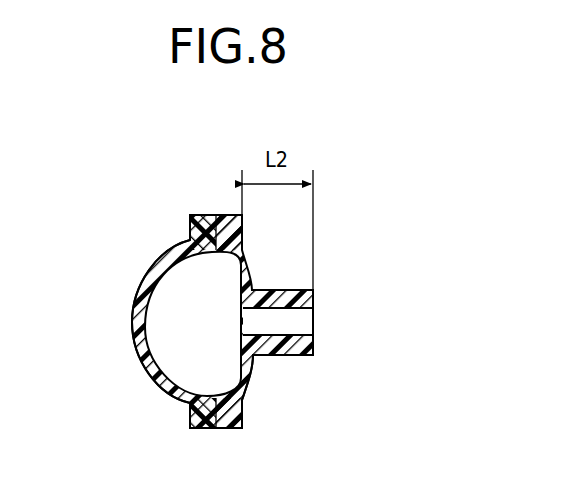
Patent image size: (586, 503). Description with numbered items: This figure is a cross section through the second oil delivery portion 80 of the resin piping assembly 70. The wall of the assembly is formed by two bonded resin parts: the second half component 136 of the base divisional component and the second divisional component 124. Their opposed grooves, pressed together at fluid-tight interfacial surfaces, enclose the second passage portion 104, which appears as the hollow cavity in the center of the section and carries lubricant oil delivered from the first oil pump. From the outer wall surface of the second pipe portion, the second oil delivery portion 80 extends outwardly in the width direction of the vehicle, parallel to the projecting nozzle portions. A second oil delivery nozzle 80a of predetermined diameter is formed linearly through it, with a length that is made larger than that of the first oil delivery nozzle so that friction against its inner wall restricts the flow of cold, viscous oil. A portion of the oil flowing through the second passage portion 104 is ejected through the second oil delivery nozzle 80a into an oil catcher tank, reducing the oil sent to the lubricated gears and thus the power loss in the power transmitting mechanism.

The resin piping assembly 70 is at (136, 235).
The second half component 136 is at (141, 337).
The second passage portion 104 is at (204, 304).
The second oil delivery portion 80 is at (278, 300).
The second oil delivery nozzle 80a is at (285, 336).
The second divisional component 124 is at (243, 373).